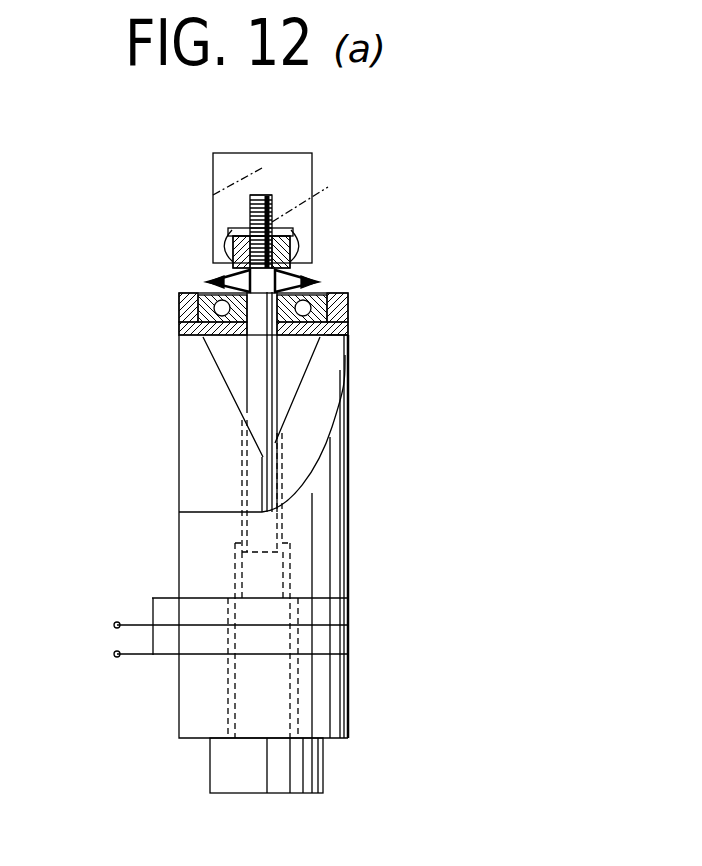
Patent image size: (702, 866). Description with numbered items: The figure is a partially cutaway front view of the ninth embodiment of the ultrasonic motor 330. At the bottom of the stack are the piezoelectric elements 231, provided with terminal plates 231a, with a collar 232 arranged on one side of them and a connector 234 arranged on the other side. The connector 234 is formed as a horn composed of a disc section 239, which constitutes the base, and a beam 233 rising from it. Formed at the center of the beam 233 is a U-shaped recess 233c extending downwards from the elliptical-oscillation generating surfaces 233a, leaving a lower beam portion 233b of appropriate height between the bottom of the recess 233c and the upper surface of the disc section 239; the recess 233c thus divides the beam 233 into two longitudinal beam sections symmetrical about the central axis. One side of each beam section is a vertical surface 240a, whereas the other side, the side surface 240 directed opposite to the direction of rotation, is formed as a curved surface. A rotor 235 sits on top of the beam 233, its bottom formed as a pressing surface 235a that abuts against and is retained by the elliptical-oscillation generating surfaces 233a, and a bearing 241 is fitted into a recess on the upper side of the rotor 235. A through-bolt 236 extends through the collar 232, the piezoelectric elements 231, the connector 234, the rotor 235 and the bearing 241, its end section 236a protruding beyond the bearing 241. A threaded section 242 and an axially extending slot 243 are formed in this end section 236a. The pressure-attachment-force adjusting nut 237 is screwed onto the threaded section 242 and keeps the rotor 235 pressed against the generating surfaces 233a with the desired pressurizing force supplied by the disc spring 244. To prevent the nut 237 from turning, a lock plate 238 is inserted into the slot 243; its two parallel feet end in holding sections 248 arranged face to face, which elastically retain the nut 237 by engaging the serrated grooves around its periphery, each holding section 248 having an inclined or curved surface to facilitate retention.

The ultrasonic motor 330 is at (377, 267).
The lock plate 238 is at (300, 165).
The slot 243 is at (293, 189).
The end section 236a is at (261, 194).
The threaded section 242 is at (250, 200).
The pressure-attachment-force adjusting nut 237 is at (230, 233).
The holding sections 248 is at (297, 250).
The disc spring 244 is at (220, 276).
The rotor 235 is at (348, 303).
The elliptical-oscillation generating surfaces 233a is at (180, 325).
The bearing 241 is at (316, 293).
The pressing surface 235a is at (333, 336).
The through-bolt 236 is at (267, 387).
The U-shaped recess 233c is at (212, 358).
The beam 233 is at (190, 370).
The connector 234 is at (349, 523).
The side surfaces 240 is at (318, 437).
The vertical surface 240a is at (192, 462).
The lower beam portion 233b is at (255, 472).
The disc section 239 is at (192, 562).
The piezoelectric elements 231 is at (347, 608).
The terminal plates 231a is at (153, 598).
The collar 232 is at (347, 700).